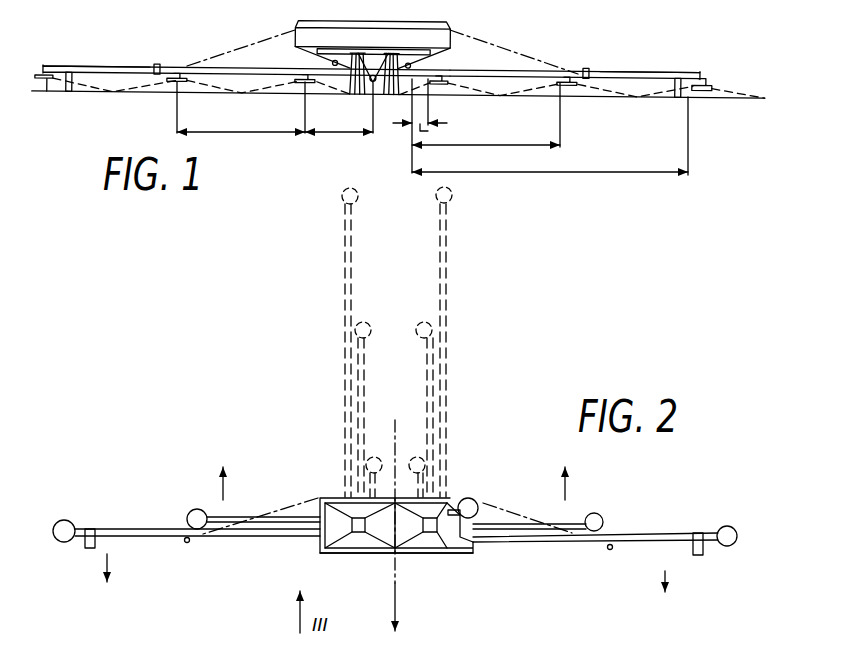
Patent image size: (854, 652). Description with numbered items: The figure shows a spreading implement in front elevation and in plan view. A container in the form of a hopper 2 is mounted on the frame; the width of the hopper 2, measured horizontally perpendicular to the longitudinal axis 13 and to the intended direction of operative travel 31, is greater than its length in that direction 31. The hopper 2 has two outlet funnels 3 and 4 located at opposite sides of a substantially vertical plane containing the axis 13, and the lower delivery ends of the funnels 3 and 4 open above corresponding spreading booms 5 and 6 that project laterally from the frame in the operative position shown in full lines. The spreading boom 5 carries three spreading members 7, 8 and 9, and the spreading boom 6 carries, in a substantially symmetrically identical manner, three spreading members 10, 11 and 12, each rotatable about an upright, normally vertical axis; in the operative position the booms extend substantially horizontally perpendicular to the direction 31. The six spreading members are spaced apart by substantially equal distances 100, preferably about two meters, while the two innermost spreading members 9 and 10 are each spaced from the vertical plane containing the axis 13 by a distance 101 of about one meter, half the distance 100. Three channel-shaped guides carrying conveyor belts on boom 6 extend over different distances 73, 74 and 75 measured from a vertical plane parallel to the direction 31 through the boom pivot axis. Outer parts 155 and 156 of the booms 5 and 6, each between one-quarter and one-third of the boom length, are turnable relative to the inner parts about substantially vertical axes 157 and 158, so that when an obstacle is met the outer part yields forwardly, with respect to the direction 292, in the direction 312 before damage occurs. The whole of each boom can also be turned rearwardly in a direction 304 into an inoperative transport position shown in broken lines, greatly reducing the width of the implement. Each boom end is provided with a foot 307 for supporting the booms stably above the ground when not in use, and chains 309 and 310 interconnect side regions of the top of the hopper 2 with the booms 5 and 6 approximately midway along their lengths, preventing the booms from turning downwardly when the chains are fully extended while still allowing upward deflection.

In FIG. 1, the hopper 2 is at (341, 4).
In FIG. 2, the hopper 2 is at (331, 496).
In FIG. 1, the outlet funnel 3 is at (296, 49).
In FIG. 1, the outlet funnel 4 is at (433, 56).
In FIG. 1, the spreading boom 5 is at (214, 63).
In FIG. 2, the spreading boom 5 is at (342, 352).
In FIG. 1, the spreading boom 6 is at (564, 71).
In FIG. 2, the spreading boom 6 is at (450, 352).
In FIG. 1, the spreading member 7 is at (47, 92).
In FIG. 2, the spreading member 7 is at (63, 520).
In FIG. 1, the spreading member 8 is at (172, 83).
In FIG. 2, the spreading member 8 is at (187, 514).
In FIG. 1, the spreading member 9 is at (301, 83).
In FIG. 1, the spreading member 10 is at (444, 84).
In FIG. 2, the spreading member 10 is at (469, 498).
In FIG. 1, the spreading member 11 is at (569, 94).
In FIG. 2, the spreading member 11 is at (602, 517).
In FIG. 1, the spreading member 12 is at (706, 97).
In FIG. 2, the spreading member 12 is at (745, 519).
In FIG. 2, the longitudinal axis 13 is at (408, 406).
In FIG. 2, the intended direction of operative travel 31 is at (392, 565).
In FIG. 1, the distance 73 is at (550, 127).
In FIG. 1, the distance 74 is at (486, 115).
In FIG. 1, the distance 75 is at (429, 111).
In FIG. 1, the distance 100 is at (241, 107).
In FIG. 1, the distance 101 is at (339, 108).
In FIG. 1, the outer part 155 is at (100, 51).
In FIG. 1, the outer part 156 is at (659, 71).
In FIG. 1, the substantially vertical axis 157 is at (158, 62).
In FIG. 2, the substantially vertical axis 157 is at (186, 543).
In FIG. 1, the substantially vertical axis 158 is at (587, 64).
In FIG. 2, the substantially vertical axis 158 is at (607, 549).
In FIG. 2, the direction 292 is at (395, 593).
In FIG. 2, the direction 304 is at (223, 496).
In FIG. 1, the foot 307 is at (70, 96).
In FIG. 2, the foot 307 is at (86, 547).
In FIG. 1, the chain 309 is at (252, 36).
In FIG. 2, the chain 309 is at (276, 511).
In FIG. 1, the chain 310 is at (489, 40).
In FIG. 2, the chain 310 is at (489, 502).
In FIG. 2, the direction 312 is at (107, 556).